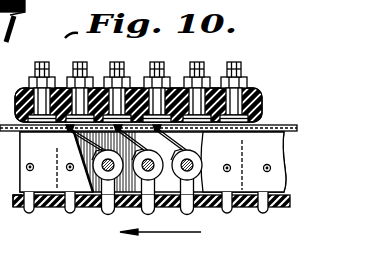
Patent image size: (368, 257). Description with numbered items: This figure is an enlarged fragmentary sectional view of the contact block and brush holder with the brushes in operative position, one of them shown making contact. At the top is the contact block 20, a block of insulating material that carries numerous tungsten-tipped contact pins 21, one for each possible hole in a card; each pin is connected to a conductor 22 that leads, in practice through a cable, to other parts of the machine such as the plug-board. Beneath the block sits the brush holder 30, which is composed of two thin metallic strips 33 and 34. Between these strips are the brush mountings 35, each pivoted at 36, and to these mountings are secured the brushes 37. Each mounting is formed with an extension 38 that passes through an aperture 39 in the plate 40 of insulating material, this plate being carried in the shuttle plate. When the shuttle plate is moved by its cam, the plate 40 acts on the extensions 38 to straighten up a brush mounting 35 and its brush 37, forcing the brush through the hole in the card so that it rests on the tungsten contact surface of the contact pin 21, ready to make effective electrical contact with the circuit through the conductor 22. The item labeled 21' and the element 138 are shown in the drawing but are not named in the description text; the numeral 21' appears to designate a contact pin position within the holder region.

The contact block 20 is at (259, 105).
The contact pin 21 is at (138, 60).
The nut 21' is at (250, 165).
The conductor 22 is at (129, 88).
The plate 138 is at (287, 130).
The brush holder 30 is at (172, 162).
The metallic strip 33 is at (242, 207).
The metallic strip 34 is at (205, 207).
The brush mounting 35 is at (92, 206).
The pivot 36 is at (194, 167).
The brush 37 is at (72, 145).
The extension 38 is at (113, 214).
The aperture 39 is at (62, 206).
The plate of insulating material 40 is at (16, 200).